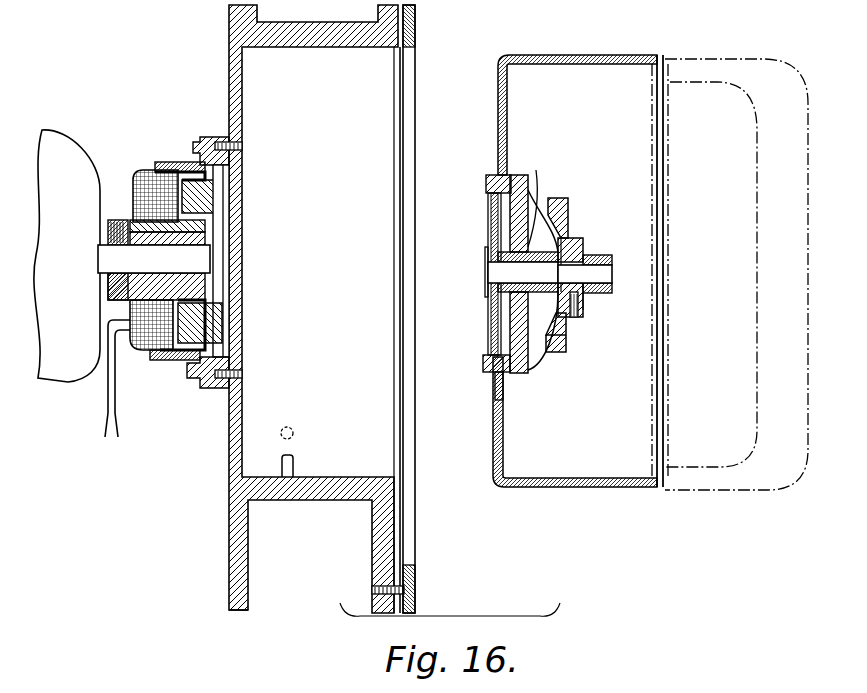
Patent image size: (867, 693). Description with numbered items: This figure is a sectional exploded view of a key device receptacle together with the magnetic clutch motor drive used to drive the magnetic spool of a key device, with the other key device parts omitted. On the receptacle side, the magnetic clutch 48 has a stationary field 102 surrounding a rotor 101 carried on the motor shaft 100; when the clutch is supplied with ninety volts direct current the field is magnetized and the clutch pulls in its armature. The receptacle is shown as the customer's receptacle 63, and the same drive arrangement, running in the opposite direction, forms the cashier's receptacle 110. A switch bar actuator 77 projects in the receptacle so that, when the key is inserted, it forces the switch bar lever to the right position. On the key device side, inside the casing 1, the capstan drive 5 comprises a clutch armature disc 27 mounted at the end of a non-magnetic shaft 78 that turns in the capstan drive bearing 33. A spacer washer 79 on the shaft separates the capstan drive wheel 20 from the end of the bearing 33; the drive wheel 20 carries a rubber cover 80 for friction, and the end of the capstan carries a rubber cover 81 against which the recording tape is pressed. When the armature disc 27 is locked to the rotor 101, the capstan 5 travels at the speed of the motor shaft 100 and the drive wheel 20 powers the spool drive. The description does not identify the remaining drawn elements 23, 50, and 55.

The casing 1 is at (577, 487).
The capstan drive 5 is at (605, 250).
The capstan drive wheel 20 is at (563, 200).
The outlet passage 23 is at (748, 250).
The clutch armature disc 27 is at (497, 215).
The capstan drive bearing 33 is at (542, 201).
The magnetic clutch 48 is at (215, 297).
The tank wall 50 is at (70, 293).
The drain hole 55 is at (292, 427).
The customer's receptacle 63 is at (221, 552).
The switch bar actuator 77 is at (296, 466).
The non-magnetic shaft 78 is at (485, 278).
The spacer washer 79 is at (556, 300).
The rubber cover 80 is at (568, 205).
The rubber cover 81 is at (588, 300).
The motor shaft 100 is at (148, 268).
The rotor 101 is at (223, 197).
The stationary field 102 is at (140, 347).
The cashier's receptacle 110 is at (230, 613).